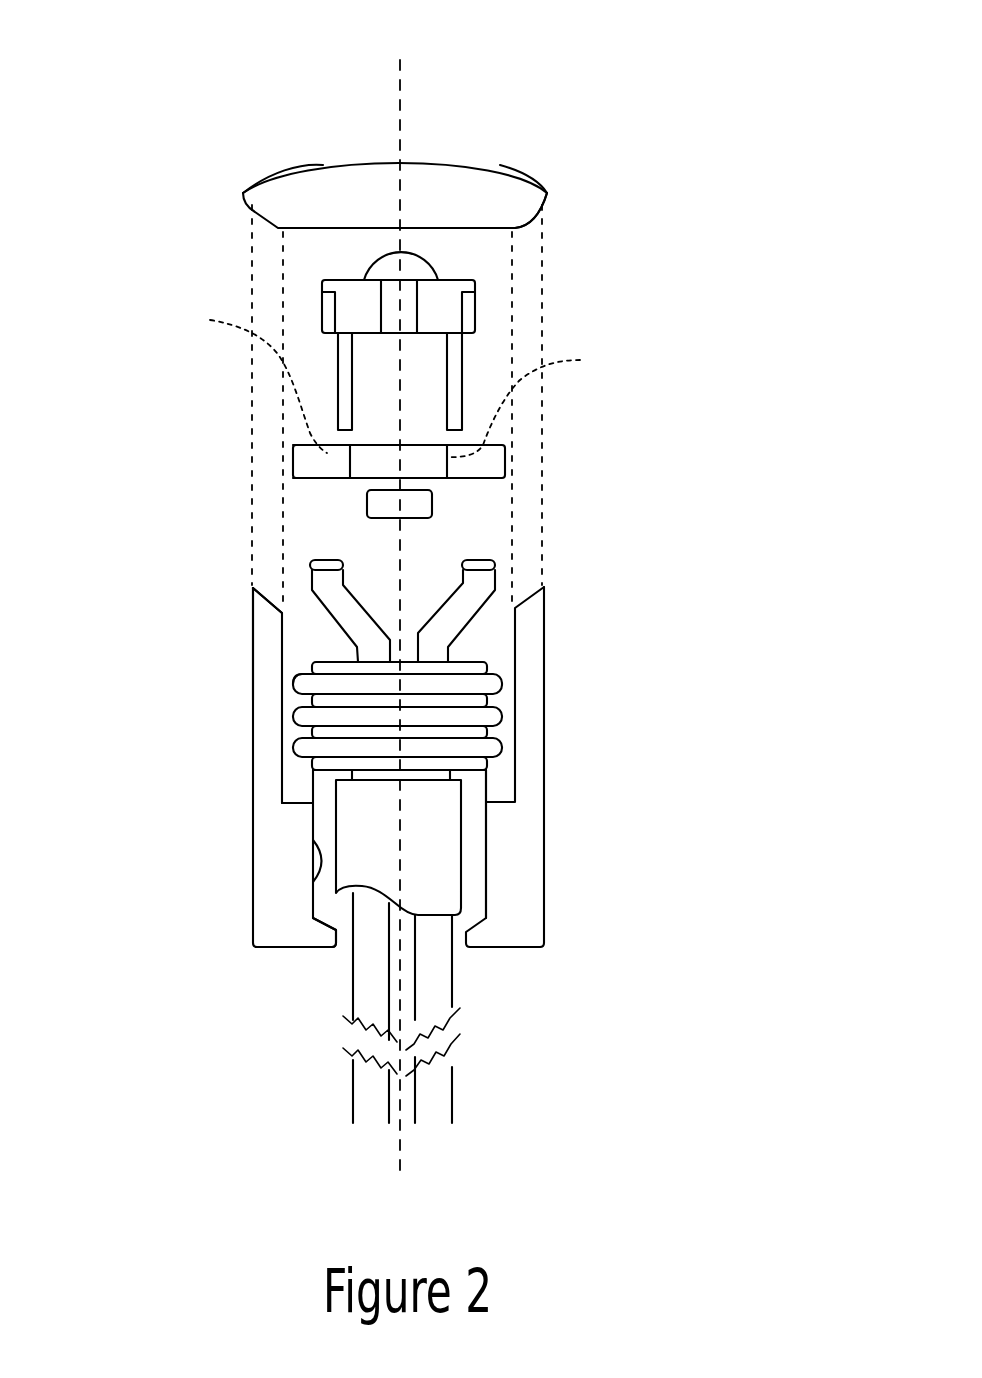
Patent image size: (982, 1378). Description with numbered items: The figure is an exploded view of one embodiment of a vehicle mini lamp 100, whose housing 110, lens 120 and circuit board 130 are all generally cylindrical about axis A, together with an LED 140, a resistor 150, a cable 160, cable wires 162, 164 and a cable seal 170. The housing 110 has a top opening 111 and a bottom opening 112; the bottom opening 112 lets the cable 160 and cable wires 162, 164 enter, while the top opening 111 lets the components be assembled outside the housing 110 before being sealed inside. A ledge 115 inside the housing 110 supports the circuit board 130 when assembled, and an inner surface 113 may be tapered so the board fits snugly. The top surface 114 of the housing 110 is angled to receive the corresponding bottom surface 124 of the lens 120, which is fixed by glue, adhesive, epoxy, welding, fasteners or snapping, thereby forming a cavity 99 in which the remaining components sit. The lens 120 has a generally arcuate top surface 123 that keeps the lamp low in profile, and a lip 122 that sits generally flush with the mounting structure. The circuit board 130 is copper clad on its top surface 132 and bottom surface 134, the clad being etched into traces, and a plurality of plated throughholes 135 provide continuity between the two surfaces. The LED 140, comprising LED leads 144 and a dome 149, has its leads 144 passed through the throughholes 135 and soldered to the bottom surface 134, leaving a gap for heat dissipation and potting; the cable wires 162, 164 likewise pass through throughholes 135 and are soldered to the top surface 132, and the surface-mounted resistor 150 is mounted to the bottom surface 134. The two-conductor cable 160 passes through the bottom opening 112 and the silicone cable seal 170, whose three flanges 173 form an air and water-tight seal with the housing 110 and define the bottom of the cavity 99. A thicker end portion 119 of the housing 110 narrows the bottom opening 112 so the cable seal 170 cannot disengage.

The vehicle mini lamp 100 is at (718, 155).
The axis A is at (400, 73).
The housing 110 is at (527, 795).
The top opening 111 is at (288, 596).
The bottom opening 112 is at (338, 960).
The inner surface 113 is at (313, 880).
The top surface 114 is at (253, 588).
The ledge 115 is at (313, 805).
The end portion 119 is at (510, 933).
The lens 120 is at (490, 207).
The lip 122 is at (547, 193).
The top surface 123 is at (323, 165).
The bottom surface 124 is at (540, 227).
The circuit board 130 is at (493, 462).
The top surface 132 is at (323, 453).
The bottom surface 134 is at (307, 473).
The throughholes 135 is at (393, 381).
The LED 140 is at (442, 307).
The LED leads 144 is at (457, 363).
The dome 149 is at (377, 263).
The resistor 150 is at (428, 507).
The cable 160 is at (443, 865).
The cable wire 162 is at (337, 622).
The cable wire 164 is at (497, 587).
The cable seal 170 is at (513, 667).
The flanges 173 is at (293, 725).
The cavity 99 is at (488, 642).